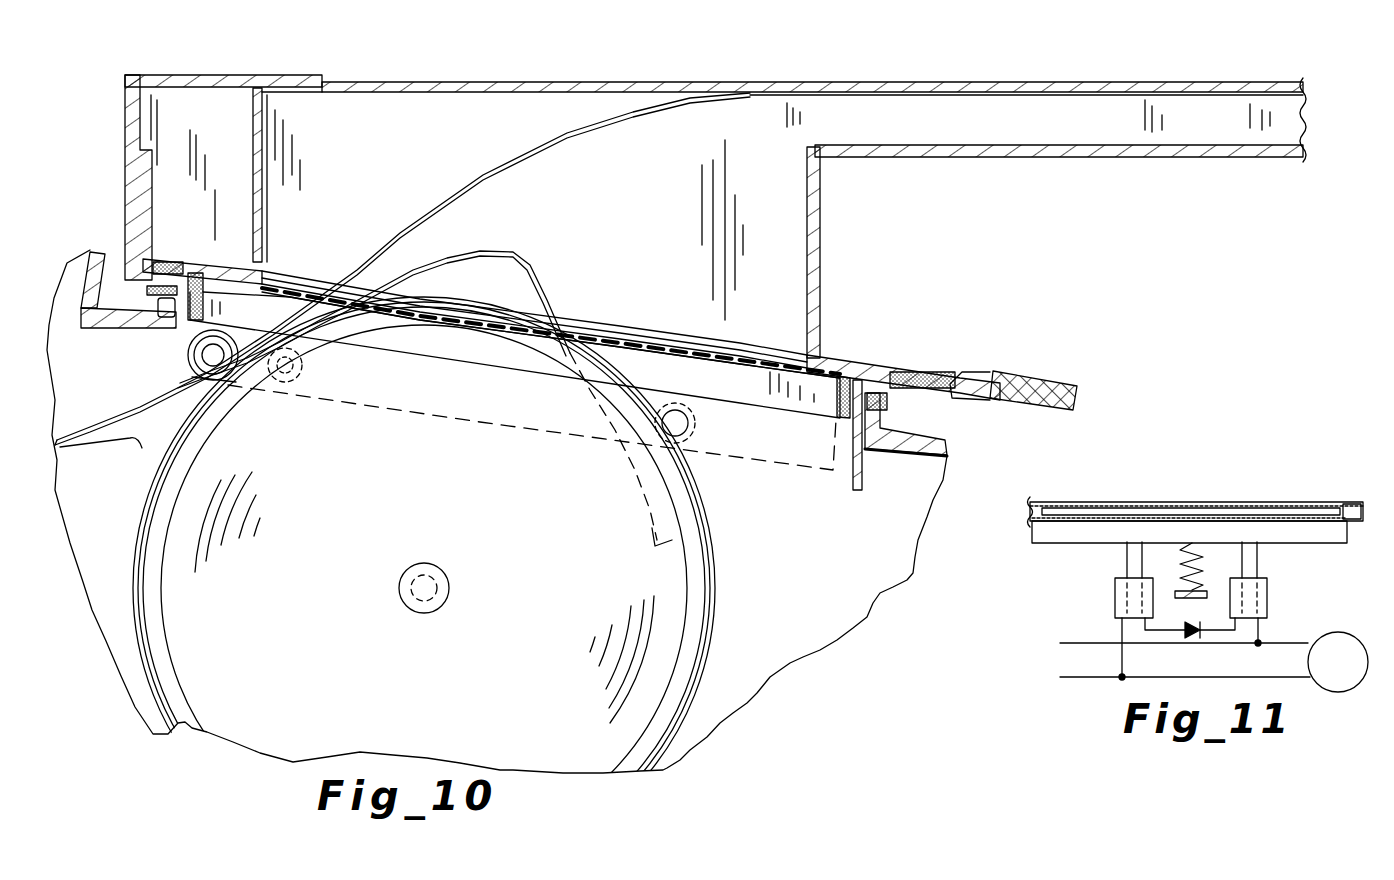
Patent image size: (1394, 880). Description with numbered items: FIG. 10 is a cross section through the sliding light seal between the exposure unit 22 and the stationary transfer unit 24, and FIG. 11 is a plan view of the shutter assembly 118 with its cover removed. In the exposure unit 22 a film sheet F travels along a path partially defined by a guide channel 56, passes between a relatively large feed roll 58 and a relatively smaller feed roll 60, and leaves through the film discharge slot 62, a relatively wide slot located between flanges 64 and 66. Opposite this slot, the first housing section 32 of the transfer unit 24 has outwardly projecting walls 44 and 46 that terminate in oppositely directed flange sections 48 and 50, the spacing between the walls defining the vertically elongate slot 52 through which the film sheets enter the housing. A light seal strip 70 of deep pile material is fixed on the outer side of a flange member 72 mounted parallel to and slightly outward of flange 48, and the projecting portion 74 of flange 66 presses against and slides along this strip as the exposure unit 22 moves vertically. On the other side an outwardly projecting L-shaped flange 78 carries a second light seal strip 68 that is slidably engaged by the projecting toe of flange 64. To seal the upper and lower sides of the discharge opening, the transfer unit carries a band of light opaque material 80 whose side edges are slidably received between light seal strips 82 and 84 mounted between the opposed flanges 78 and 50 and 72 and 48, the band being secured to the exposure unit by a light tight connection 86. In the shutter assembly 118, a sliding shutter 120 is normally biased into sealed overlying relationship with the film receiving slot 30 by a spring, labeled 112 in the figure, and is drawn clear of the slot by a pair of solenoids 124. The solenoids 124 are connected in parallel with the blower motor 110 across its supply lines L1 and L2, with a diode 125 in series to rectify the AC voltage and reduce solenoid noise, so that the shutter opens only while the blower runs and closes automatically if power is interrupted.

In FIG. 10, the exposure unit 22 is at (824, 560).
In FIG. 10, the transfer unit 24 is at (1122, 158).
In FIG. 11, the transfer unit 24 is at (1148, 504).
In FIG. 11, the film receiving slot 30 is at (1225, 511).
In FIG. 10, the first housing section 32 is at (990, 158).
In FIG. 10, the outwardly projecting wall 44 is at (808, 272).
In FIG. 10, the outwardly projecting wall 46 is at (268, 236).
In FIG. 10, the flange section 48 is at (222, 266).
In FIG. 10, the flange section 50 is at (900, 362).
In FIG. 10, the vertically elongate slot 52 is at (667, 320).
In FIG. 10, the guide channel 56 is at (142, 455).
In FIG. 10, the large feed roll 58 is at (522, 631).
In FIG. 10, the small feed roll 60 is at (190, 355).
In FIG. 10, the film discharge slot 62 is at (741, 391).
In FIG. 10, the flange 64 is at (882, 434).
In FIG. 10, the flange 66 is at (140, 332).
In FIG. 10, the light seal strip 68 is at (928, 412).
In FIG. 10, the light seal strip 70 is at (125, 330).
In FIG. 10, the flange member 72 is at (140, 268).
In FIG. 10, the projecting portion 74 is at (168, 322).
In FIG. 10, the L-shaped flange 78 is at (852, 466).
In FIG. 10, the band of light opaque material 80 is at (762, 346).
In FIG. 10, the light seal strip 82 is at (955, 383).
In FIG. 10, the light seal strip 84 is at (150, 264).
In FIG. 10, the light tight connection 86 is at (757, 396).
In FIG. 10, the film sheet F is at (487, 175).
In FIG. 11, the blower motor 110 is at (1320, 675).
In FIG. 11, the spring 112 is at (1206, 553).
In FIG. 11, the shutter assembly 118 is at (1300, 609).
In FIG. 11, the sliding shutter 120 is at (1314, 503).
In FIG. 11, the solenoids 124 is at (1116, 598).
In FIG. 11, the diode 125 is at (1192, 636).
In FIG. 11, the blower motor supply line L1 is at (1168, 643).
In FIG. 11, the blower motor supply line L2 is at (1170, 677).